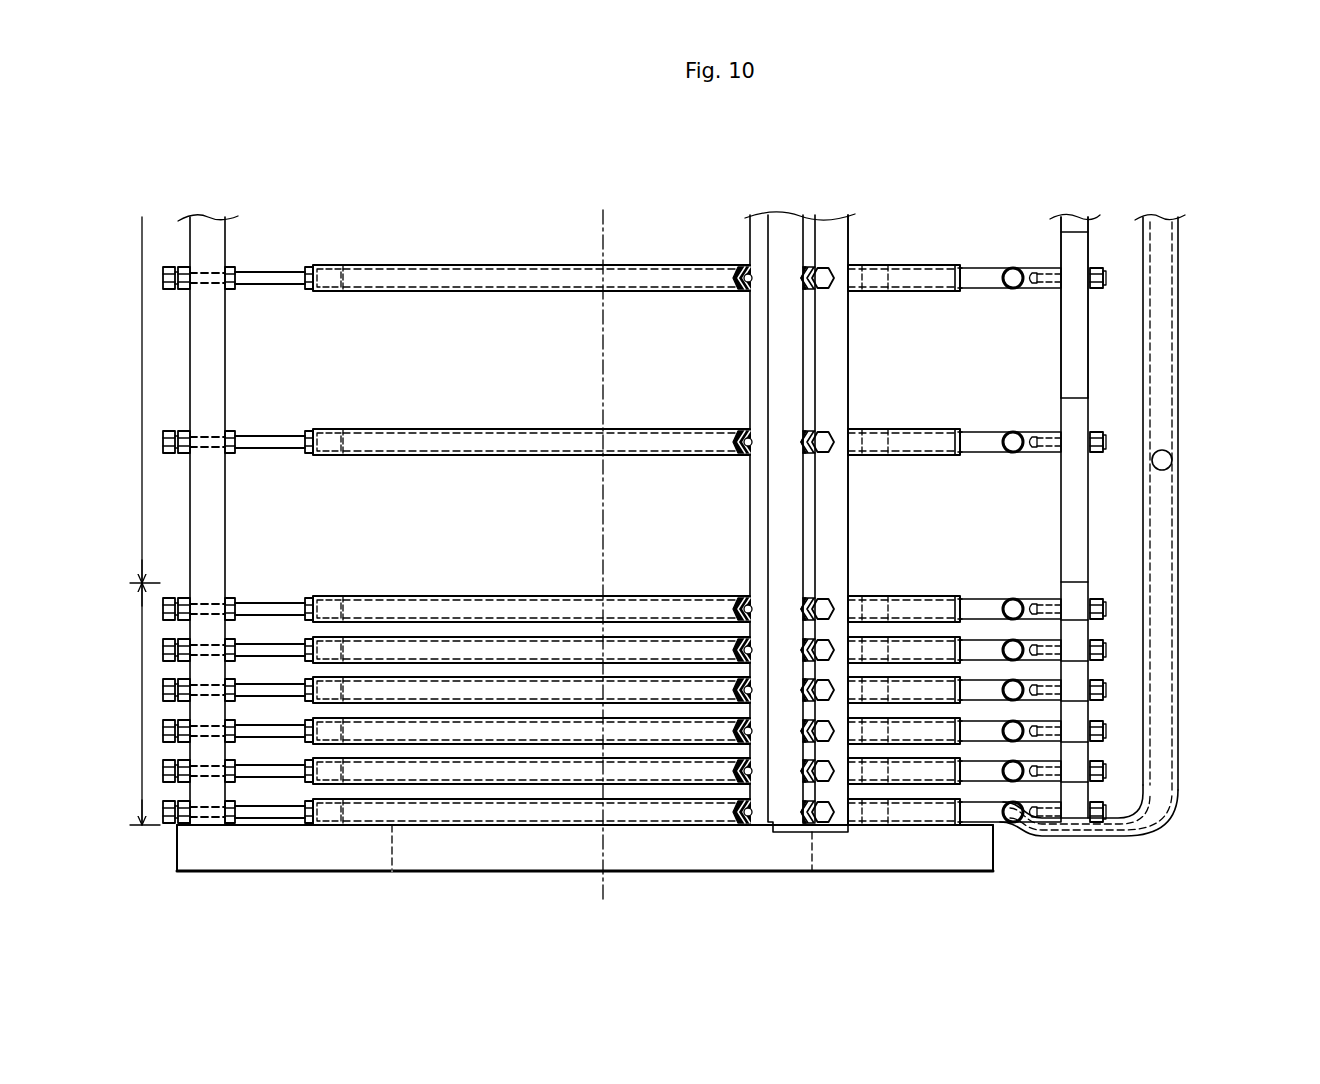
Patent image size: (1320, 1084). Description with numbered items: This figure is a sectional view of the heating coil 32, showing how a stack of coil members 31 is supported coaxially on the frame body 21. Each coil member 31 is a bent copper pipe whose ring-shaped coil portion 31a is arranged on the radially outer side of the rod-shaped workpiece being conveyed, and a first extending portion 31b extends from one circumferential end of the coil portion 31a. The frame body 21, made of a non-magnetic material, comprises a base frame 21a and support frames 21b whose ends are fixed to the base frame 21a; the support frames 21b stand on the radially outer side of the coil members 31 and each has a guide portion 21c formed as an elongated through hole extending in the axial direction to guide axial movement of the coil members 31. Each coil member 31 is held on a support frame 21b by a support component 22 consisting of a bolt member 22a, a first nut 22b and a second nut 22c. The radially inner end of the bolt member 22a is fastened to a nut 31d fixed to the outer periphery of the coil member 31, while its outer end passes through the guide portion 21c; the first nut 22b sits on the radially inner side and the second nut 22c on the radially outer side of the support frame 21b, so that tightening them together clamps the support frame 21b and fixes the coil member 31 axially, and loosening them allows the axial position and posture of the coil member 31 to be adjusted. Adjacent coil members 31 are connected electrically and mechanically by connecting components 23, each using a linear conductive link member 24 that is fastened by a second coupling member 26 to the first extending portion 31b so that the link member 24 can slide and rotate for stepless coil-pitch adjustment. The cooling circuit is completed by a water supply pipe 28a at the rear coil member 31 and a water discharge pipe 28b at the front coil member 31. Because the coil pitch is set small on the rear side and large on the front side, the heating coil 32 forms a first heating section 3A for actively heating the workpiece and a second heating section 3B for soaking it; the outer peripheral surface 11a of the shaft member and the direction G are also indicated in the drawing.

The first heating section 3A is at (134, 704).
The second heating section 3B is at (134, 411).
The outer peripheral surface 11a is at (653, 815).
The frame body 21 is at (887, 882).
The base frame 21a is at (335, 855).
The support frame 21b is at (215, 530).
The guide portion 21c is at (812, 358).
The support component 22 is at (232, 478).
The bolt member 22a is at (275, 494).
The first nut 22b is at (230, 262).
The second nut 22c is at (183, 262).
The connecting component 23 is at (1091, 339).
The link member 24 is at (1070, 342).
The second coupling member 26 is at (1104, 278).
The water supply pipe 28a is at (1088, 825).
The water discharge pipe 28b is at (1165, 342).
The coil member 31 is at (674, 560).
The coil portion 31a is at (458, 272).
The first extending portion 31b is at (980, 272).
The nut 31d is at (313, 292).
The heating coil 32 is at (1216, 192).
The gas flow direction G is at (1232, 266).